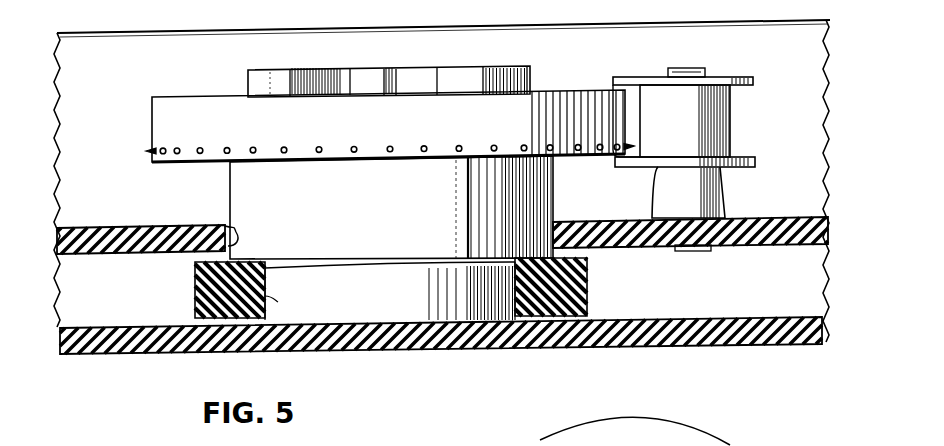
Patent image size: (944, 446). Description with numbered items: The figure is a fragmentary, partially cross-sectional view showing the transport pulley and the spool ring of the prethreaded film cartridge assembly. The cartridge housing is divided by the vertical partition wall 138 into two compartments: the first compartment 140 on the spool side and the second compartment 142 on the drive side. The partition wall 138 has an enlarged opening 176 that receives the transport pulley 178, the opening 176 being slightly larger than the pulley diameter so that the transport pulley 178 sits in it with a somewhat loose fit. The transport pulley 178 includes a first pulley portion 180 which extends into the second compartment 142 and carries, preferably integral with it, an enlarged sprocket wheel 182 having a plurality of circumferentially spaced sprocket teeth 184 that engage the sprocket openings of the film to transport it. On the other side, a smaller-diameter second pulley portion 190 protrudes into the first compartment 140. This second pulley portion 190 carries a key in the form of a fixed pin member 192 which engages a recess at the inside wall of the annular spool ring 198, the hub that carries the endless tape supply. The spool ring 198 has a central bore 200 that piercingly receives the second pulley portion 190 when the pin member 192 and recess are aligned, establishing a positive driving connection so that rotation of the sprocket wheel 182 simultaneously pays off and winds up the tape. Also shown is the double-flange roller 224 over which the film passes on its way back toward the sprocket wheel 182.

The vertical partition wall 138 is at (97, 240).
The first compartment 140 is at (718, 292).
The second compartment 142 is at (113, 77).
The opening 176 is at (232, 232).
The transport pulley 178 is at (252, 185).
The first pulley portion 180 is at (306, 178).
The sprocket wheel 182 is at (560, 104).
The sprocket teeth 184 is at (424, 146).
The second pulley portion 190 is at (411, 300).
The pin member 192 is at (460, 270).
The spool ring 198 is at (195, 294).
The central bore 200 is at (276, 296).
The double-flange roller 224 is at (712, 128).